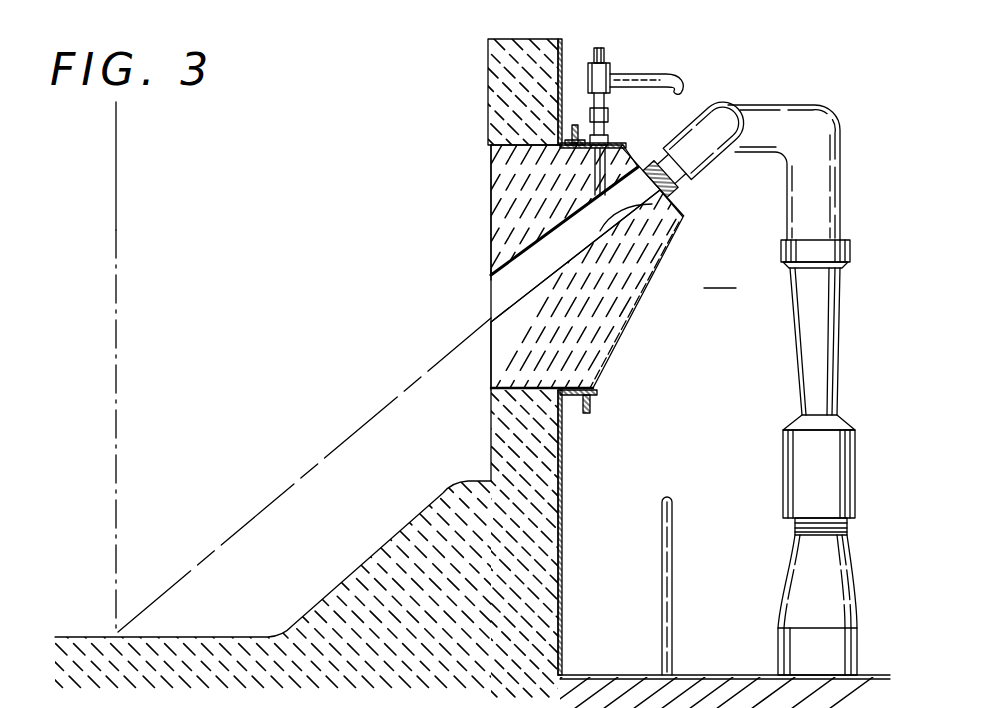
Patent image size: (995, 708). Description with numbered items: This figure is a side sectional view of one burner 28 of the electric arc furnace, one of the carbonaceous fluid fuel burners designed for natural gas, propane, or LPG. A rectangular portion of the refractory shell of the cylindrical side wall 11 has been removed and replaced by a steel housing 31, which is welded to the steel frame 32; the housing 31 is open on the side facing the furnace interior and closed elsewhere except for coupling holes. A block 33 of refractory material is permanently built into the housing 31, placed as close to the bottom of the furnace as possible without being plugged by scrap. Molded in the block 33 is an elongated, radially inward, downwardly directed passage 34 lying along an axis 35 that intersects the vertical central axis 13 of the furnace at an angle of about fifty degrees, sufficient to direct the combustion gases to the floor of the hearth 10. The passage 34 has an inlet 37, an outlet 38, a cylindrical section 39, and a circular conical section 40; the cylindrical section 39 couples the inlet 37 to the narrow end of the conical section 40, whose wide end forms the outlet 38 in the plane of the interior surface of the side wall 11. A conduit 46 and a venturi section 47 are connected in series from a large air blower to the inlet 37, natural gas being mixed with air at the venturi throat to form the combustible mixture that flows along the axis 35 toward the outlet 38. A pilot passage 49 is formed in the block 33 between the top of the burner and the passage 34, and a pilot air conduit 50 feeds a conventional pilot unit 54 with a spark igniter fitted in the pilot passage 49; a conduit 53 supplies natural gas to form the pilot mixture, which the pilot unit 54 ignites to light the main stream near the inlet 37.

The hearth 10 is at (340, 582).
The cylindrical side wall 11 is at (488, 98).
The vertical central axis 13 is at (116, 150).
The carbonaceous fluid fuel burner 28 is at (720, 277).
The steel housing 31 is at (638, 302).
The steel frame 32 is at (563, 423).
The refractory block 33 is at (490, 190).
The passage 34 is at (532, 289).
The axis 35 is at (326, 450).
The inlet 37 is at (682, 194).
The outlet 38 is at (491, 276).
The cylindrical section 39 is at (606, 242).
The circular conical section 40 is at (538, 328).
The conduit 46 is at (736, 108).
The venturi section 47 is at (838, 413).
The pilot passage 49 is at (628, 150).
The pilot air conduit 50 is at (674, 74).
The conduit 53 is at (673, 546).
The pilot unit 54 is at (605, 98).